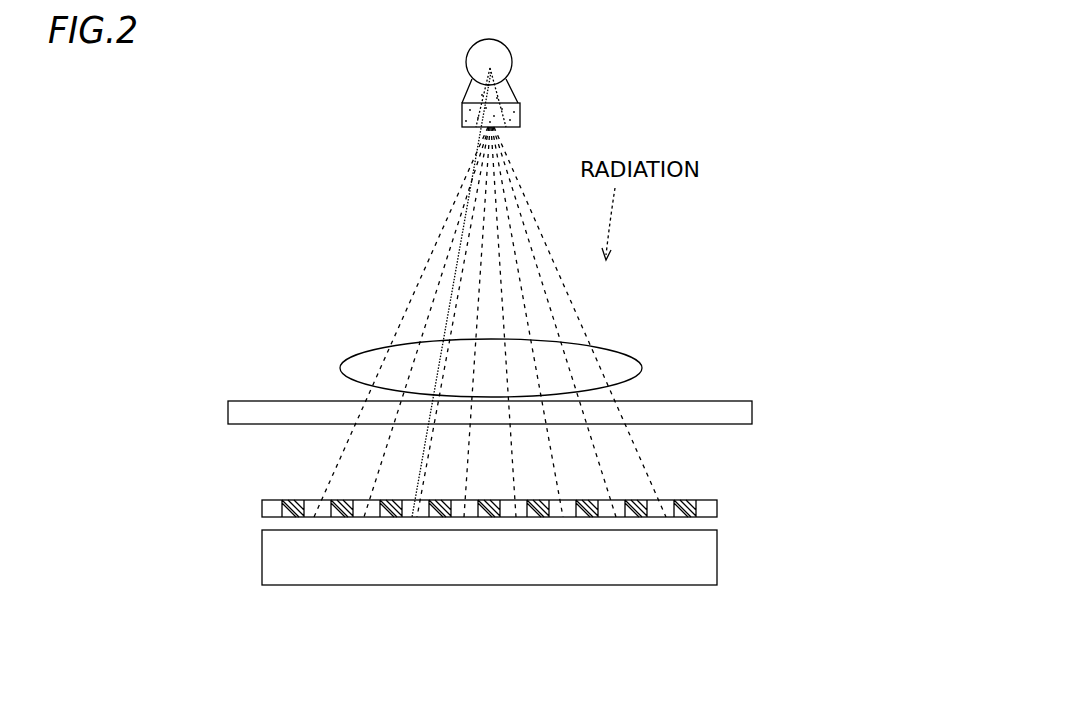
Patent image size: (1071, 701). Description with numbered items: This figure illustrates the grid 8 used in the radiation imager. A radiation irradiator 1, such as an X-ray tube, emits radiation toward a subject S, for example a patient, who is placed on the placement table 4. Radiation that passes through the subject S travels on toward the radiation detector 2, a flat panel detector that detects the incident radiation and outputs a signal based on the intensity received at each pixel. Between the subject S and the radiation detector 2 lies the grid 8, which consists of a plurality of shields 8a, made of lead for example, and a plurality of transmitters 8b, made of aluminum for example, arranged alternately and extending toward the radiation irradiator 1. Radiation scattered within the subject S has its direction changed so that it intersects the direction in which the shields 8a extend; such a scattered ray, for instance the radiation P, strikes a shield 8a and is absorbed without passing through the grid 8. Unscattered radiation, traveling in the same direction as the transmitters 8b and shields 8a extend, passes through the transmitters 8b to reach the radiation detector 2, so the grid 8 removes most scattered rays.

The radiation irradiator 1 is at (467, 63).
The radiation detector 2 is at (718, 556).
The placement table 4 is at (708, 400).
The grid 8 is at (471, 474).
The shields 8a is at (292, 496).
The transmitters 8b is at (318, 496).
The radiation P is at (448, 357).
The subject S is at (632, 352).